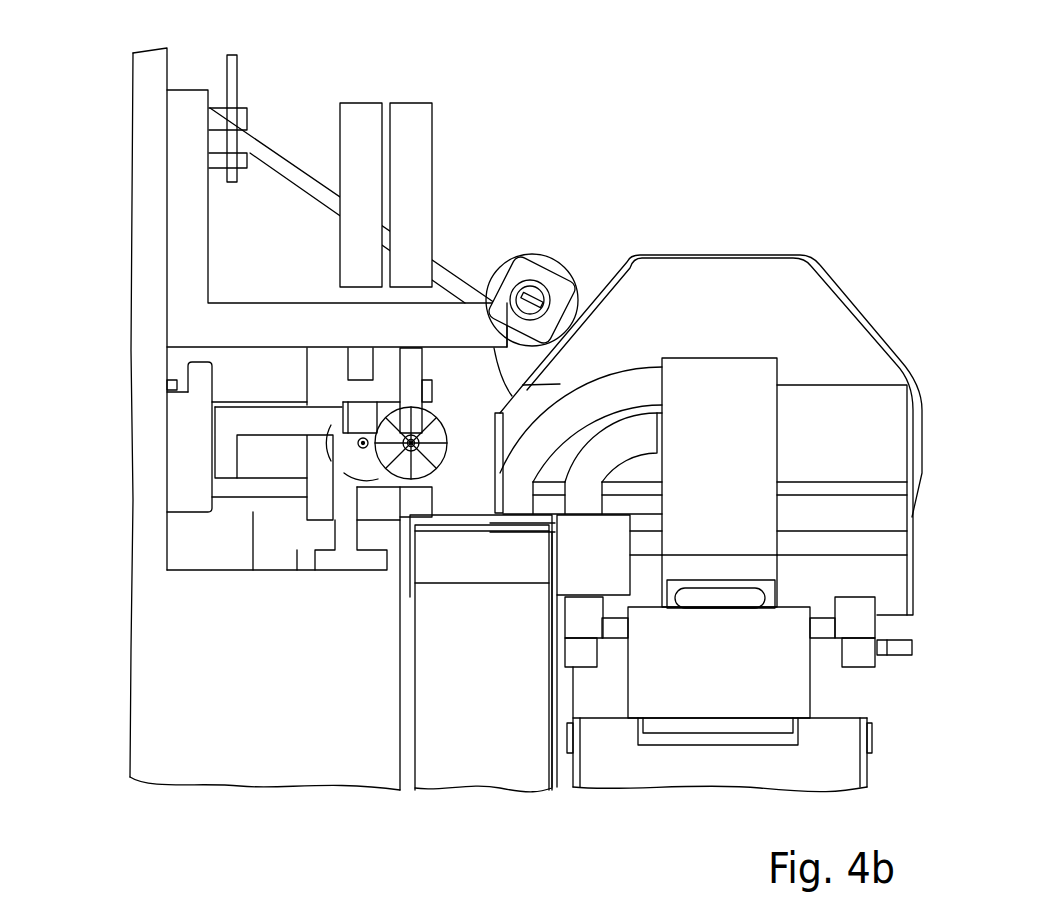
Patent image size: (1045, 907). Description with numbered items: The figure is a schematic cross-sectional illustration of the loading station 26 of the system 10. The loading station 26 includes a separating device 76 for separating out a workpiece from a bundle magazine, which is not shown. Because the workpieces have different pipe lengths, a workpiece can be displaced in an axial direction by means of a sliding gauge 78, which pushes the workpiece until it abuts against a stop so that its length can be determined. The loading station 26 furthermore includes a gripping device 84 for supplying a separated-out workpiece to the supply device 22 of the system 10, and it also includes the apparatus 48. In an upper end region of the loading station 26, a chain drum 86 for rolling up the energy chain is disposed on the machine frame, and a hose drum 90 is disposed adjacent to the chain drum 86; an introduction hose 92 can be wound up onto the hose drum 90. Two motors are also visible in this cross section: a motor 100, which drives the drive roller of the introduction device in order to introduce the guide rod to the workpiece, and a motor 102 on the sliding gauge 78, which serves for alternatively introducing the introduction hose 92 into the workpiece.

The system 10 is at (104, 146).
The supply device 22 is at (847, 697).
The loading station 26 is at (124, 500).
The apparatus 48 is at (410, 452).
The separating device 76 is at (182, 660).
The sliding gauge 78 is at (270, 423).
The gripping device 84 is at (185, 249).
The chain drum 86 is at (415, 177).
The hose drum 90 is at (368, 133).
The introduction hose 92 is at (362, 445).
The motor 100 is at (415, 357).
The motor 102 is at (362, 357).